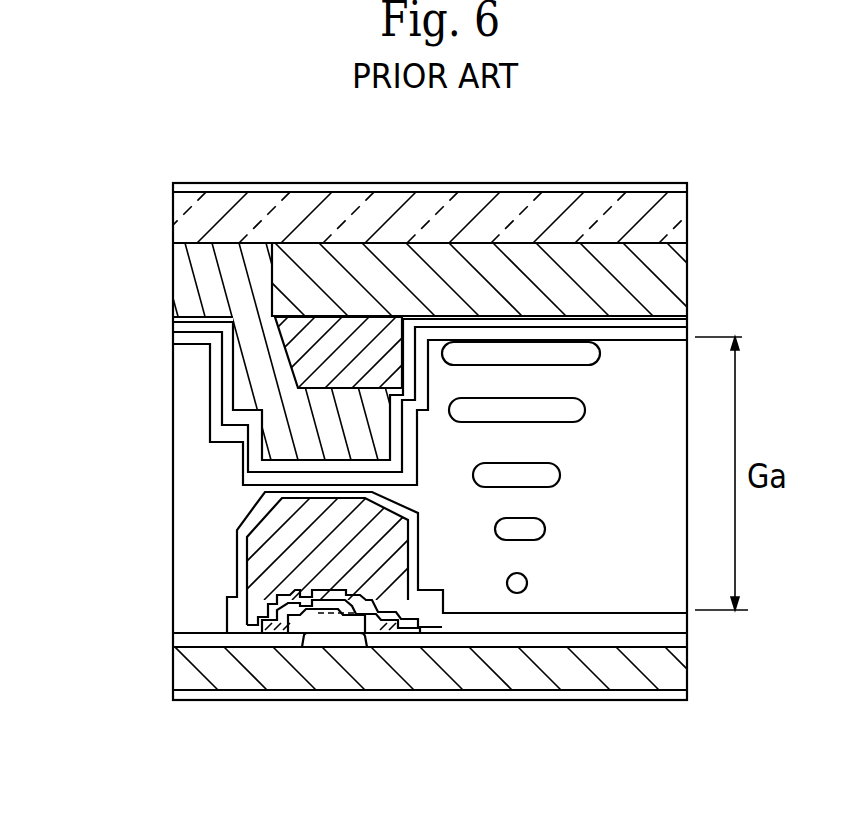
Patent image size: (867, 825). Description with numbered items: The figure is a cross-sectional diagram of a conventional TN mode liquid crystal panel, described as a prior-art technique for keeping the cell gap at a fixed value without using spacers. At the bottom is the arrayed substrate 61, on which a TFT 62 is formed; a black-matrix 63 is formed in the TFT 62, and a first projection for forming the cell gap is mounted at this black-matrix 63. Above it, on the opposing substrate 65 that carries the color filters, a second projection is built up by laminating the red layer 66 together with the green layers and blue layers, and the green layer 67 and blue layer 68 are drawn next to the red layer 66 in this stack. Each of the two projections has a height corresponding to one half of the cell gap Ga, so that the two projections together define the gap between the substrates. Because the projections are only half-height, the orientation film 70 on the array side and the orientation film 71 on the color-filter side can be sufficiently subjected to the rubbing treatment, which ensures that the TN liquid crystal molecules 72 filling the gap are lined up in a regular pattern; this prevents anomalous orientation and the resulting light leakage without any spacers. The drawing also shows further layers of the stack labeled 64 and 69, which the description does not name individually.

The arrayed substrate 61 is at (688, 663).
The TFT 62 is at (328, 625).
The black-matrix 63 is at (275, 571).
The common electrode 64 is at (282, 490).
The opposing substrate 65 is at (687, 212).
The red layer 66 is at (507, 262).
The green color filter 67 is at (356, 335).
The blue color filter 68 is at (185, 273).
The black matrix layer 69 is at (275, 463).
The orientation film 70 is at (257, 510).
The orientation film 71 is at (175, 325).
The TN liquid crystal molecules 72 is at (587, 410).